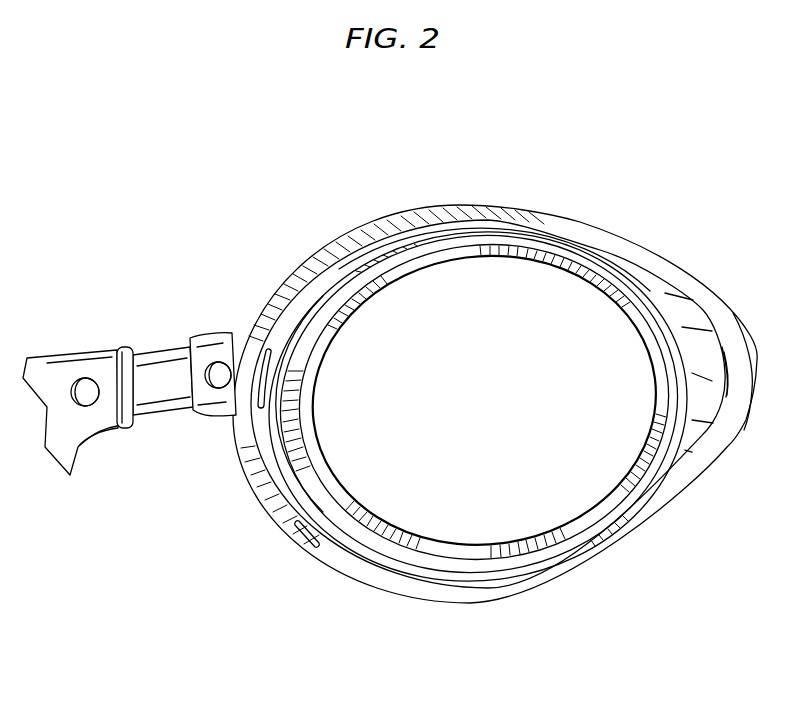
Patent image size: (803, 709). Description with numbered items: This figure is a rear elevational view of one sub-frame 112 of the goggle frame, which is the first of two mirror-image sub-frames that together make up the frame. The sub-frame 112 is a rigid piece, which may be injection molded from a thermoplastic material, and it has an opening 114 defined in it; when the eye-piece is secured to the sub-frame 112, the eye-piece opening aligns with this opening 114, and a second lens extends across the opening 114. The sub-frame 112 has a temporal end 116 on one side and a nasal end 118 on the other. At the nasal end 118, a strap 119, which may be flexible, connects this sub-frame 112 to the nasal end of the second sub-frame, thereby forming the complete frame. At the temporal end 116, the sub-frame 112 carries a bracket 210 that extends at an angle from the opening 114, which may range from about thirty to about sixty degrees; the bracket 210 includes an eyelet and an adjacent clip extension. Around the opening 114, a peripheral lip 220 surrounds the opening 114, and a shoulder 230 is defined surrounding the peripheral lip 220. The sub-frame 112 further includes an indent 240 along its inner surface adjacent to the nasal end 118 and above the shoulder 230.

The first sub-frame 112 is at (206, 101).
The opening 114 is at (487, 492).
The temporal end 116 is at (677, 280).
The nasal end 118 is at (283, 305).
The strap 119 is at (157, 395).
The bracket 210 is at (698, 440).
The peripheral lip 220 is at (500, 250).
The shoulder 230 is at (367, 280).
The indent 240 is at (267, 357).